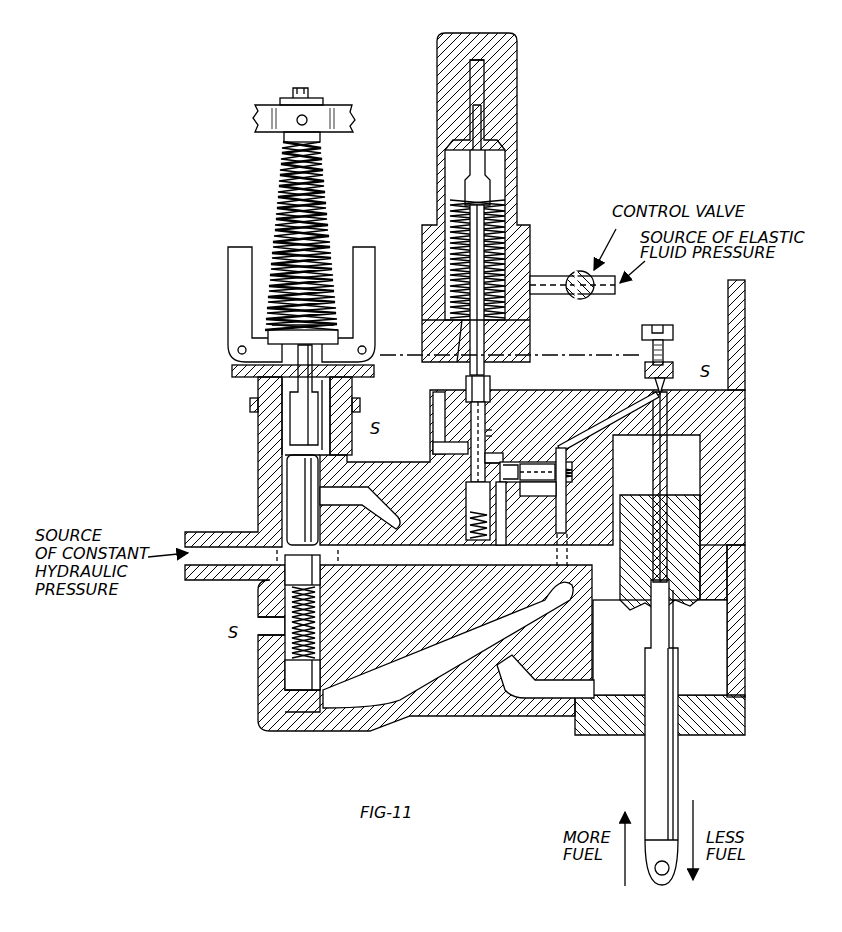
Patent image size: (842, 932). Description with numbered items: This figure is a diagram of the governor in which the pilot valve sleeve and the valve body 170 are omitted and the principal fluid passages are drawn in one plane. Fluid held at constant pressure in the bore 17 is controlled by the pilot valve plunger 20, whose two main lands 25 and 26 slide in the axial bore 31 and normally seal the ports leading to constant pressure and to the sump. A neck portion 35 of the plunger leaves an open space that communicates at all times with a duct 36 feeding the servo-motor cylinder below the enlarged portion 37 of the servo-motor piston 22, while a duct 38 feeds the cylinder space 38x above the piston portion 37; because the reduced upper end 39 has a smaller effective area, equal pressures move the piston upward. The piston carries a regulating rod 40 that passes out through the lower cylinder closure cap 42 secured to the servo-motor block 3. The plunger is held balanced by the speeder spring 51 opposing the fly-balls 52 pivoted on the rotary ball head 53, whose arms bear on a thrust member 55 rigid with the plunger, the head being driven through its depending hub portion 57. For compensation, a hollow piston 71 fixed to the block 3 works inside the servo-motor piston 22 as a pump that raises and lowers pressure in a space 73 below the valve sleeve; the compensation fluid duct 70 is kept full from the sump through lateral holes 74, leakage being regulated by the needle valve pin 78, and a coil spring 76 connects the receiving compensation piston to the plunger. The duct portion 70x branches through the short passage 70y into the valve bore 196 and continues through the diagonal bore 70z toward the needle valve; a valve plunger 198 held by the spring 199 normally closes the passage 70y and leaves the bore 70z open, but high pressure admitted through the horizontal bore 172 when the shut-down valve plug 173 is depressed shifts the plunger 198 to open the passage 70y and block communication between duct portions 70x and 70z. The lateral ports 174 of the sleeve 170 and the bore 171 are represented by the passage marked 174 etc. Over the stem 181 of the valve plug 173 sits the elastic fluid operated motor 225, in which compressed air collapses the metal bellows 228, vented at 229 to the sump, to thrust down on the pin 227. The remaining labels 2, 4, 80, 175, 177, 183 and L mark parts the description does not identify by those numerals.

The housing 2 is at (258, 439).
The servo-motor block 3 is at (745, 416).
The casing wall 4 is at (745, 295).
The bore 17 is at (377, 553).
The pilot valve plunger 20 is at (300, 478).
The servo-motor piston 22 is at (718, 594).
The lower land 25 is at (302, 622).
The upper land 26 is at (306, 416).
The axial bore 31 is at (318, 618).
The neck portion 35 is at (300, 522).
The duct 36 is at (457, 591).
The enlarged portion of servo-motor piston 37 is at (660, 647).
The duct 38 is at (497, 640).
The servo-motor cylinder space 38x is at (735, 553).
The reduced upper end of servo-motor piston 39 is at (660, 553).
The regulating rod 40 is at (645, 775).
The lower cylinder closure cap 42 is at (712, 733).
The speeder spring 51 is at (290, 182).
The fly-balls 52 is at (228, 279).
The rotary ball head 53 is at (232, 369).
The thrust member 55 is at (270, 336).
The depending hub portion 57 is at (258, 393).
The compensation fluid duct 70 is at (530, 618).
The compensation fluid duct portion 70x is at (567, 486).
The short passage 70y is at (534, 503).
The diagonal bore 70z is at (608, 407).
The hollow piston 71 is at (667, 475).
The space 73 is at (300, 712).
The lateral holes 74 is at (675, 373).
The coil spring 76 is at (300, 650).
The needle valve pin 78 is at (662, 346).
The lever 80 is at (340, 110).
The valve body 170 is at (470, 430).
The bore 171 is at (447, 421).
The horizontal bore 172 is at (495, 455).
The valve plug 173 is at (490, 402).
The lateral ports 174 is at (517, 513).
The spring 175 is at (468, 523).
The port 177 is at (453, 449).
The stem 181 is at (490, 384).
The passage 183 is at (440, 393).
The cylindrical valve bore 196 is at (507, 462).
The valve plunger 198 is at (540, 462).
The spring 199 is at (574, 472).
The elastic fluid operated motor 225 is at (517, 170).
The pin 227 is at (468, 368).
The metal bellows 228 is at (445, 240).
The vent 229 is at (469, 325).
The reference line L is at (510, 343).